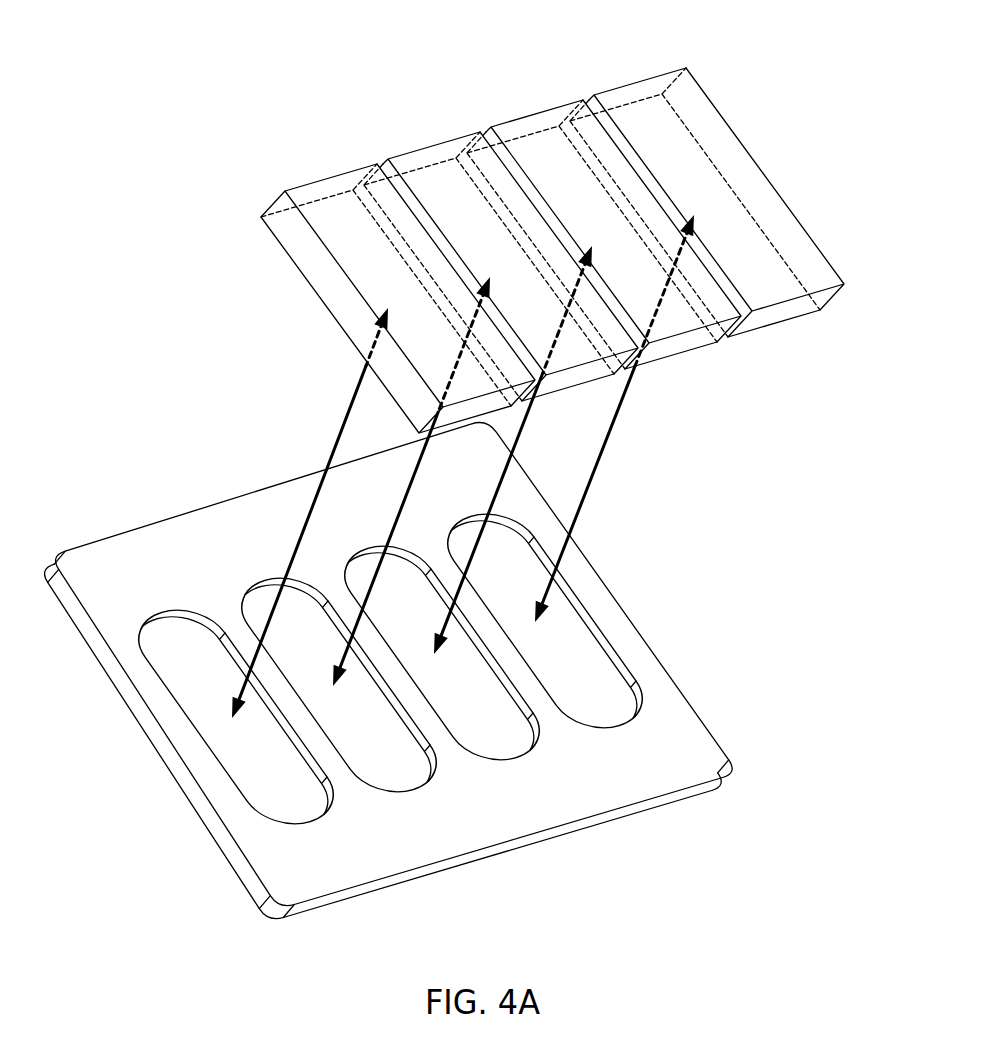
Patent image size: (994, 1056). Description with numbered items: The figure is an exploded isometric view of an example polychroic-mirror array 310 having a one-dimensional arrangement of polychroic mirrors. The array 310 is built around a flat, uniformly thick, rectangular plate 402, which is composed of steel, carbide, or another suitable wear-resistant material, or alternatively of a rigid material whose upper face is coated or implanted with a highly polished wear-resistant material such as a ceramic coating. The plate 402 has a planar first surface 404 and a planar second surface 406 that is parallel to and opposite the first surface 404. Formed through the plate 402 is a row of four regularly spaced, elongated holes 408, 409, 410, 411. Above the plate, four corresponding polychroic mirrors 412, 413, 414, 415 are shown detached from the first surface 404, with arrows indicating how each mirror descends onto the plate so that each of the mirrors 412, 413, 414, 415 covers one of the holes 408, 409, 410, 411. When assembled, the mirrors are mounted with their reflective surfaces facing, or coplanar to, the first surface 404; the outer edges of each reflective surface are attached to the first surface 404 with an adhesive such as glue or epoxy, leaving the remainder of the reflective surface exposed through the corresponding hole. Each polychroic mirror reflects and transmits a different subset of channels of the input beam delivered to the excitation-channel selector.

The polychroic-mirror array 310 is at (173, 238).
The plate 402 is at (172, 518).
The first surface 404 is at (688, 763).
The second surface 406 is at (580, 835).
The elongated hole 408 is at (275, 774).
The elongated hole 409 is at (378, 729).
The elongated hole 410 is at (475, 698).
The elongated hole 411 is at (583, 670).
The polychroic mirror 412 is at (327, 178).
The polychroic mirror 413 is at (437, 145).
The polychroic mirror 414 is at (540, 114).
The polychroic mirror 415 is at (652, 78).